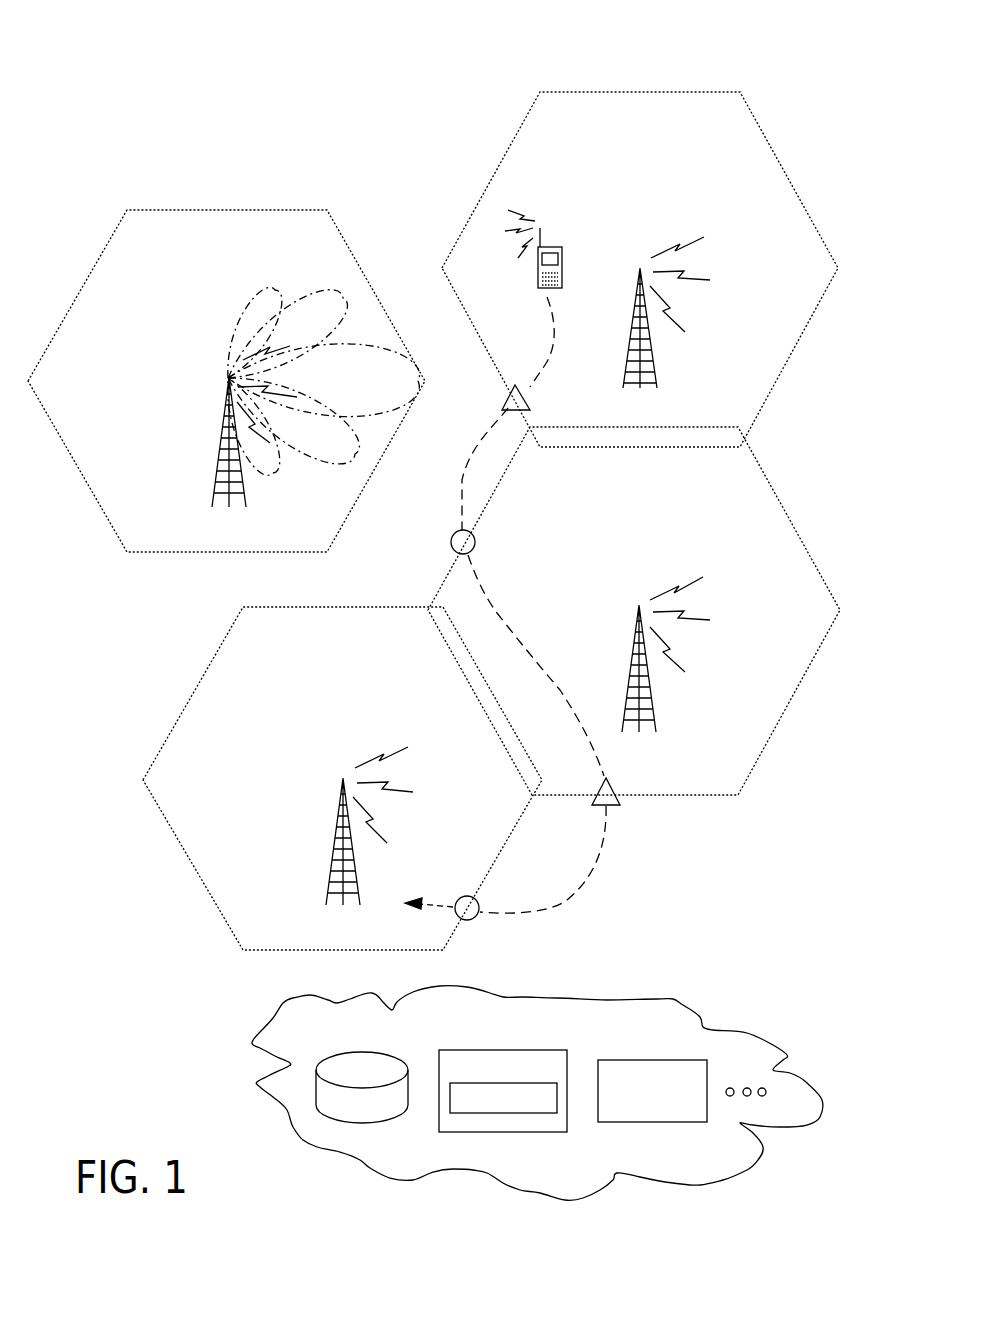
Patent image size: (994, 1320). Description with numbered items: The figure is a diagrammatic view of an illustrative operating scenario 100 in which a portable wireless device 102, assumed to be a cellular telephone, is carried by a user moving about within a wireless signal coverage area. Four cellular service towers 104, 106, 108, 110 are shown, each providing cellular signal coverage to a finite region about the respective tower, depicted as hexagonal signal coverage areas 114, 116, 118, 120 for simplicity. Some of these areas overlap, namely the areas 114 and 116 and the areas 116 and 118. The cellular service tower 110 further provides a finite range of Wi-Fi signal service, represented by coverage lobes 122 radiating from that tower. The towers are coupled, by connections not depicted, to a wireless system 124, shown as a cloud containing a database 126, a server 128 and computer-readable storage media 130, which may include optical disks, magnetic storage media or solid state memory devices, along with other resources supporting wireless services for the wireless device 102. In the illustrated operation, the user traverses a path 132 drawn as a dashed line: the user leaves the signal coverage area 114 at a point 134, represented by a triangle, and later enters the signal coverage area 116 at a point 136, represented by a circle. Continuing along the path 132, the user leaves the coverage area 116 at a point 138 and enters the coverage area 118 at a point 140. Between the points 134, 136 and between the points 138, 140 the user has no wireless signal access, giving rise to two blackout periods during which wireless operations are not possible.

The operating scenario 100 is at (443, 68).
The wireless device 102 is at (563, 258).
The cellular service tower 104 is at (625, 371).
The cellular service tower 106 is at (630, 660).
The cellular service tower 108 is at (337, 830).
The cellular service tower 110 is at (220, 433).
The signal coverage area 114 is at (767, 142).
The signal coverage area 116 is at (782, 512).
The signal coverage area 118 is at (200, 873).
The signal coverage area 120 is at (100, 507).
The coverage lobes 122 is at (243, 335).
The wireless system 124 is at (670, 1000).
The database 126 is at (373, 1123).
The server 128 is at (520, 1132).
The computer-readable storage media 130 is at (667, 1122).
The path 132 is at (497, 612).
The point 134 is at (508, 398).
The point 136 is at (450, 540).
The point 138 is at (620, 807).
The point 140 is at (475, 920).